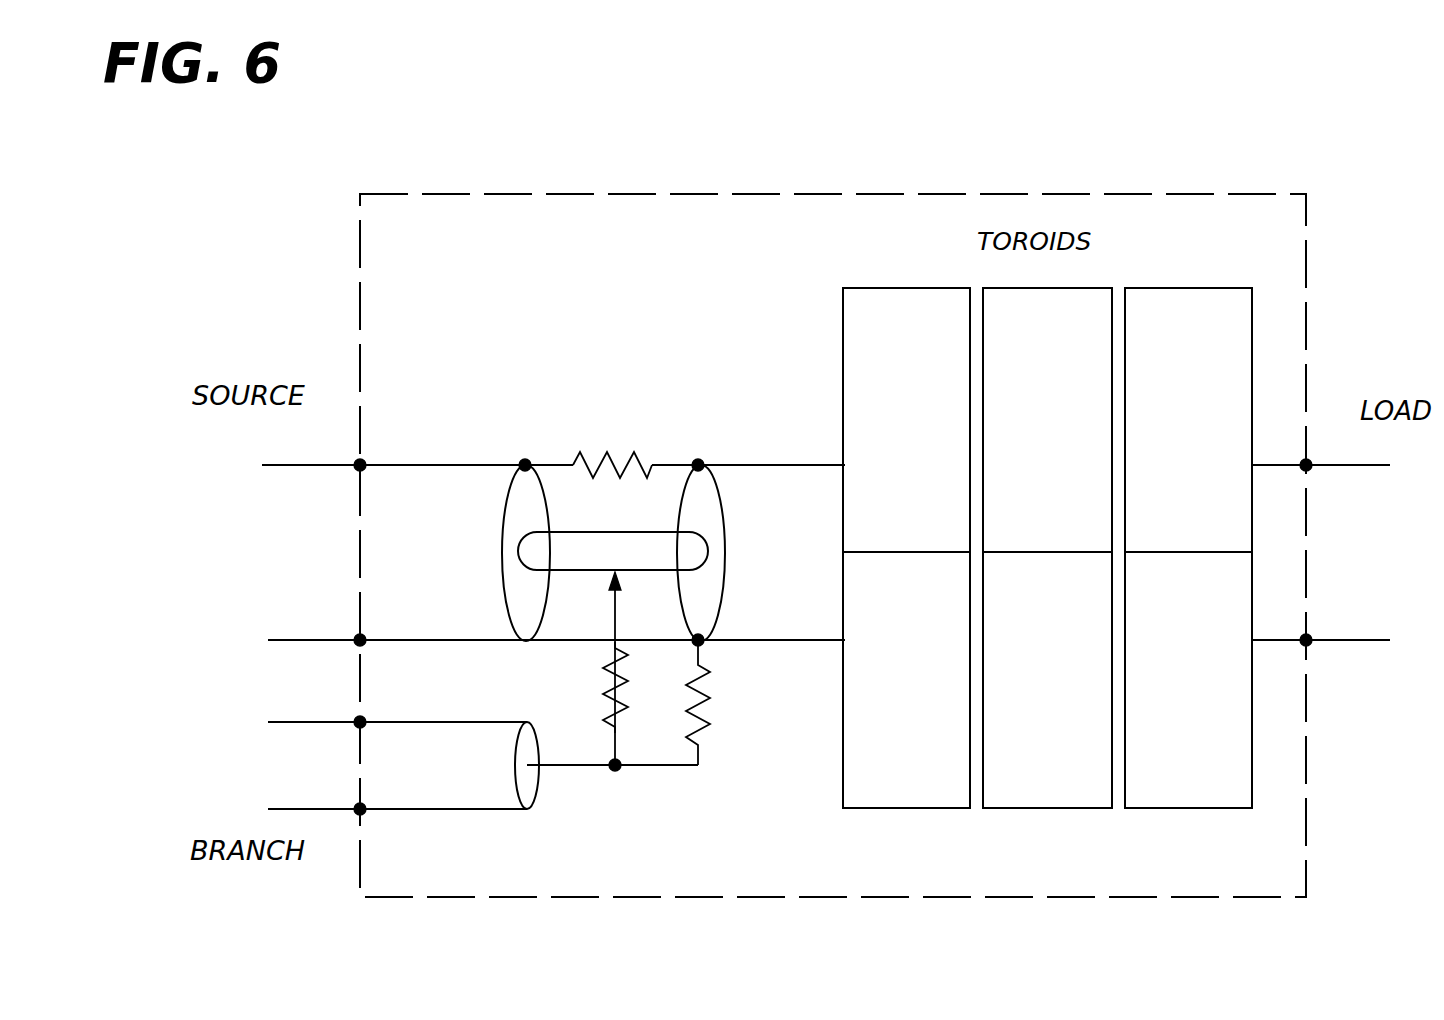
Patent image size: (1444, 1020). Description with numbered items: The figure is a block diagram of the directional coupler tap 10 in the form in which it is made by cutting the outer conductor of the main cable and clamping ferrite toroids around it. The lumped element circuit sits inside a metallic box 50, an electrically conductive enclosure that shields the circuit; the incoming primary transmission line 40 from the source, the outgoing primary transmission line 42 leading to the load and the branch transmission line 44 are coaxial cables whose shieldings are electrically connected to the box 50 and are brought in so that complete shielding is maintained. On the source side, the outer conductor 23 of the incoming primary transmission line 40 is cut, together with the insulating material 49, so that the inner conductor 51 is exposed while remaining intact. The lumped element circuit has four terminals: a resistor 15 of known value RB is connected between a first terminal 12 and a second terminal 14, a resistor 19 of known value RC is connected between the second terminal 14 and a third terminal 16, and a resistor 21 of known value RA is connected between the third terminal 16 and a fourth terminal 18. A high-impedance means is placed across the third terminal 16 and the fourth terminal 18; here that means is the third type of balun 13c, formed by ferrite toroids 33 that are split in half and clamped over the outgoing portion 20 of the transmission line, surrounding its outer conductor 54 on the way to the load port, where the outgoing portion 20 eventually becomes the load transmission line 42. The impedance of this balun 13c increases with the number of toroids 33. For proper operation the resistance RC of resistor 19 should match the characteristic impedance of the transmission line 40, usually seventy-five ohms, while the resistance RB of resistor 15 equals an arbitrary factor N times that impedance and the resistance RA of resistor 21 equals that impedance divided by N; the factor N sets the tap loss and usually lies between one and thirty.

The directional coupler tap 10 is at (622, 80).
The metallic box 50 is at (458, 194).
The incoming primary transmission line 40 is at (298, 465).
The outer conductor 23 is at (440, 463).
The fourth terminal 18 is at (527, 463).
The resistor 21 is at (638, 453).
The resistance value RA is at (608, 431).
The third terminal 16 is at (699, 463).
The outgoing portion of the transmission line 20 is at (783, 462).
The balun 13c is at (845, 301).
The ferrite toroids 33 is at (1135, 810).
The insulating material 49 is at (537, 503).
The inner conductor 51 is at (577, 573).
The first terminal 12 is at (618, 605).
The outer conductor 54 is at (795, 642).
The resistor 15 is at (620, 713).
The resistance value RB is at (576, 681).
The resistor 19 is at (706, 713).
The resistance value RC is at (733, 703).
The second terminal 14 is at (617, 770).
The branch transmission line 44 is at (313, 721).
The outgoing primary transmission line 42 is at (1348, 640).